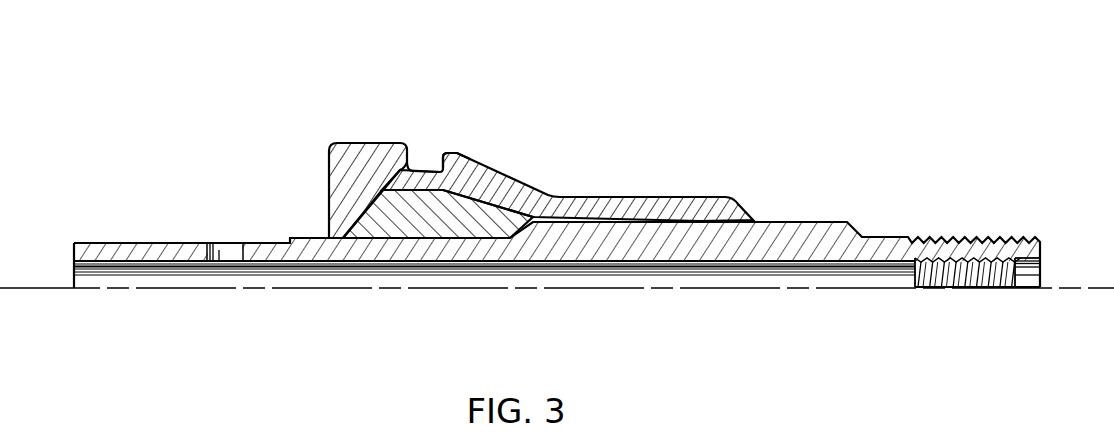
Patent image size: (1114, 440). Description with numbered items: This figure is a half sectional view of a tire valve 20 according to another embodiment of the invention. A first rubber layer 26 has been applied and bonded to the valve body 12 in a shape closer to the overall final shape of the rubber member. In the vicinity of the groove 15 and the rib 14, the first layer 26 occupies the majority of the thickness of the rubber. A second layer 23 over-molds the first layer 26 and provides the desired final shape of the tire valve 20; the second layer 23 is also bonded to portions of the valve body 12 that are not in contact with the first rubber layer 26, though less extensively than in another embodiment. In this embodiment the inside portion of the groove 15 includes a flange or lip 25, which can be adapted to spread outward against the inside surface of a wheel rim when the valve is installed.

The tire valve 20 is at (790, 103).
The valve body 12 is at (820, 230).
The rib 14 is at (448, 152).
The groove 15 is at (420, 172).
The second layer 23 is at (490, 170).
The flange or lip 25 is at (415, 163).
The first rubber layer 26 is at (462, 220).